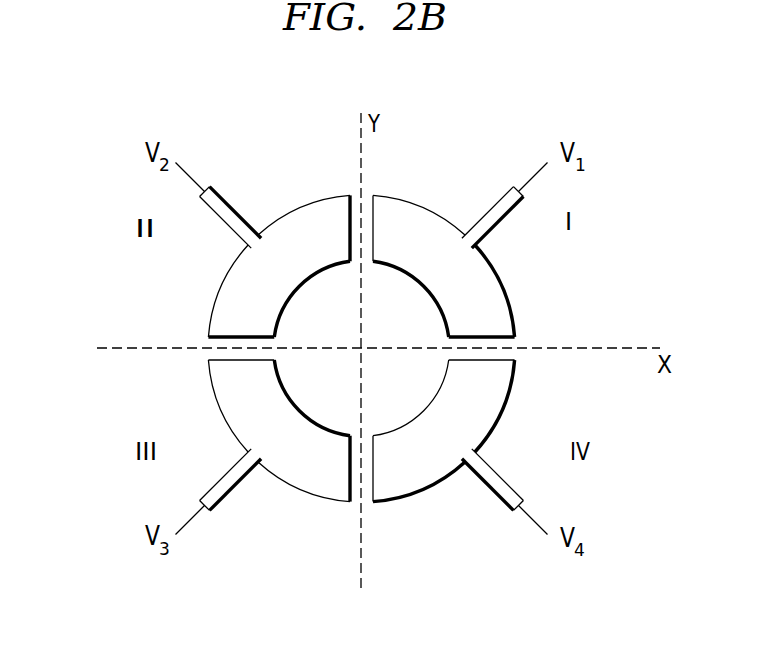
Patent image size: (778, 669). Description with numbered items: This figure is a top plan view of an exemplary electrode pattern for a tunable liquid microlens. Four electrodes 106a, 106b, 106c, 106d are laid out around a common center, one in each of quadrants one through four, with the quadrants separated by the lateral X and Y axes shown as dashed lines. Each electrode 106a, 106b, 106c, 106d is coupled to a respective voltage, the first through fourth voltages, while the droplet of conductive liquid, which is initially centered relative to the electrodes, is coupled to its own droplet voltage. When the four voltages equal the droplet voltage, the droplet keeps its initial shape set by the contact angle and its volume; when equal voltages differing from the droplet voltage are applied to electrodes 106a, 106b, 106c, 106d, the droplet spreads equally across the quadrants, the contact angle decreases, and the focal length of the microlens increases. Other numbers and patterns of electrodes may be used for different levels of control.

The electrode 106a is at (423, 220).
The electrode 106b is at (303, 218).
The electrode 106c is at (302, 477).
The electrode 106d is at (492, 392).